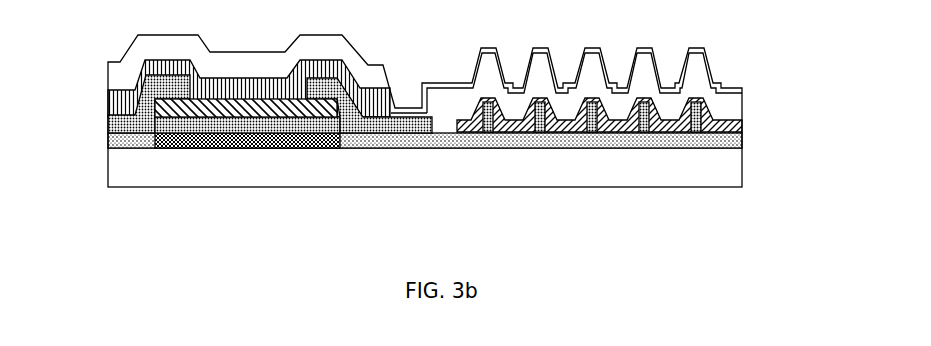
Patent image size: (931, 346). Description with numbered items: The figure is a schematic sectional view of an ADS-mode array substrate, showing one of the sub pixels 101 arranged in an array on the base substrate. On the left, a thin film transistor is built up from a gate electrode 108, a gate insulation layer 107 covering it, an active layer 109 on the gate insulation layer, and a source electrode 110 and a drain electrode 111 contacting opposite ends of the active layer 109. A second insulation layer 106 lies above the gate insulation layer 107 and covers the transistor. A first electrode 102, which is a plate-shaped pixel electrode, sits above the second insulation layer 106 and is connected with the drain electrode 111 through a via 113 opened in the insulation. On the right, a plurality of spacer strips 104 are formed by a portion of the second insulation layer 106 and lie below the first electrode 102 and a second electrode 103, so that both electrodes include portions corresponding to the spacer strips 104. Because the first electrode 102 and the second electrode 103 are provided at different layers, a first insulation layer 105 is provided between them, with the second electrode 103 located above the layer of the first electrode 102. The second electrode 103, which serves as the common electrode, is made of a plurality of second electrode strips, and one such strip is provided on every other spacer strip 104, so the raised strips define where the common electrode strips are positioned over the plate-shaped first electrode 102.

The sub pixel 101 is at (742, 175).
The first electrode 102 is at (725, 126).
The second electrode 103 is at (705, 48).
The spacer strip 104 is at (643, 127).
The first insulation layer 105 is at (723, 97).
The second insulation layer 106 is at (108, 106).
The gate insulation layer 107 is at (742, 138).
The gate electrode 108 is at (270, 140).
The active layer 109 is at (212, 100).
The source electrode 110 is at (108, 126).
The drain electrode 111 is at (385, 128).
The via 113 is at (402, 92).